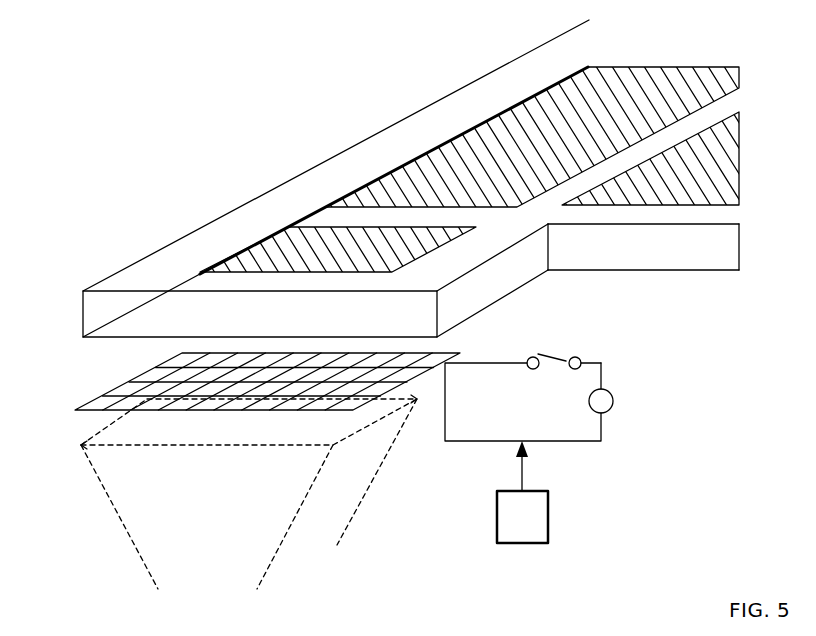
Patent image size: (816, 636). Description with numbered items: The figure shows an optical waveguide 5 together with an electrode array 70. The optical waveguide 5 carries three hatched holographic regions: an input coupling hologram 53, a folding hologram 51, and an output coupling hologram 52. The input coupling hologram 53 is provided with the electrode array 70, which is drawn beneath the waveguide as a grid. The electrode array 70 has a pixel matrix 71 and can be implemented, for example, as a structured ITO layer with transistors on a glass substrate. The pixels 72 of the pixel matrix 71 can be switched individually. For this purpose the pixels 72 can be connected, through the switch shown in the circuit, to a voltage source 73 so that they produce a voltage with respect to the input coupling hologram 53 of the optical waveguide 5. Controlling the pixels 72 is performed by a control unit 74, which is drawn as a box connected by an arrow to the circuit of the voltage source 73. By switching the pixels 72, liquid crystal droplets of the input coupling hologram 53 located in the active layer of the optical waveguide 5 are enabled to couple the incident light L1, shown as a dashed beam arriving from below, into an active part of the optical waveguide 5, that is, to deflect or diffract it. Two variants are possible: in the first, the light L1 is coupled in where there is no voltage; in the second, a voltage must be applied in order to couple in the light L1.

The optical waveguide 5 is at (378, 128).
The folding hologram 51 is at (495, 120).
The output coupling hologram 52 is at (725, 147).
The input coupling hologram 53 is at (245, 253).
The electrode array 70 is at (95, 368).
The pixel matrix 71 is at (93, 402).
The pixels 72 is at (97, 407).
The voltage source 73 is at (602, 373).
The control unit 74 is at (548, 518).
The incident light L1 is at (338, 525).